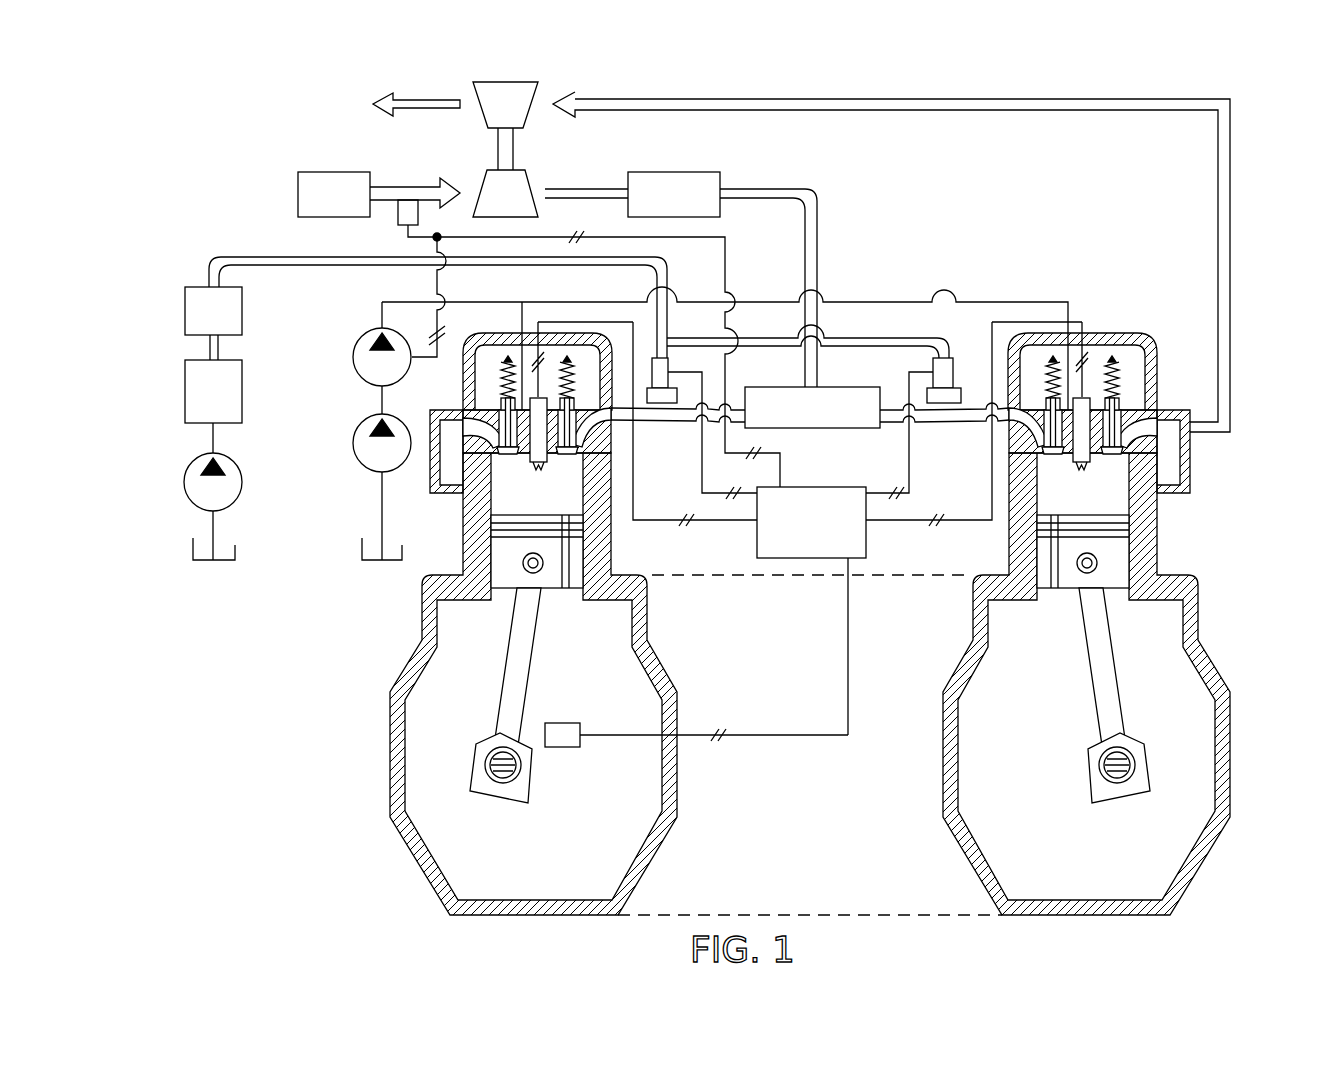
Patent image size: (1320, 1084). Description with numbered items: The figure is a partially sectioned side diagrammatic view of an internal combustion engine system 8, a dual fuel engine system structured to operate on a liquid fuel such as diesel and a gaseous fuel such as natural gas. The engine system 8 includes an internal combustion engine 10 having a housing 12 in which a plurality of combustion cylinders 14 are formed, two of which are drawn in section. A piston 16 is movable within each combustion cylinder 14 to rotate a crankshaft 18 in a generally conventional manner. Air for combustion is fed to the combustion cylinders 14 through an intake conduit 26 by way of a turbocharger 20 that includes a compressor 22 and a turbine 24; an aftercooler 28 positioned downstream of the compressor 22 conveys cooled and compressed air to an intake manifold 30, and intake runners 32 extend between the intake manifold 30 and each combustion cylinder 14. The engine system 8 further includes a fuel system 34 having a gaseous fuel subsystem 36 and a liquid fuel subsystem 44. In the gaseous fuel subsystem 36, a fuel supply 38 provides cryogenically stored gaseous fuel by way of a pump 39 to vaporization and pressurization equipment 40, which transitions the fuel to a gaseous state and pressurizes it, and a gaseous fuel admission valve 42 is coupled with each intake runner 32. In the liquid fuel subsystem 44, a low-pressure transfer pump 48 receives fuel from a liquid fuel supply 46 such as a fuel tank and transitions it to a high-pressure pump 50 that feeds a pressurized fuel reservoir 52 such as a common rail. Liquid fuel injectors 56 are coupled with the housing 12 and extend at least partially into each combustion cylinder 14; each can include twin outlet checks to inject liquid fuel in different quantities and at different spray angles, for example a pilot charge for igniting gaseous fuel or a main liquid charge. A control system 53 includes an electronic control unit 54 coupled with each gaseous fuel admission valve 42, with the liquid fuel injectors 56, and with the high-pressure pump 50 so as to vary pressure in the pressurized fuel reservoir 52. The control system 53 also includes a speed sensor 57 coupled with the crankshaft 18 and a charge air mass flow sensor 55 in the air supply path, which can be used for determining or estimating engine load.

The internal combustion engine system 8 is at (158, 108).
The internal combustion engine 10 is at (1258, 605).
The housing 12 is at (1232, 692).
The combustion cylinders 14 is at (474, 494).
The piston 16 is at (505, 568).
The crankshaft 18 is at (517, 766).
The turbocharger 20 is at (556, 80).
The compressor 22 is at (498, 175).
The turbine 24 is at (510, 82).
The intake conduit 26 is at (340, 172).
The aftercooler 28 is at (682, 172).
The intake manifold 30 is at (786, 387).
The intake runners 32 is at (665, 424).
The fuel system 34 is at (155, 295).
The gaseous fuel subsystem 36 is at (176, 437).
The fuel supply 38 is at (236, 552).
The pump 39 is at (242, 483).
The vaporization and pressurization equipment 40 is at (270, 398).
The gaseous fuel admission valve 42 is at (670, 360).
The liquid fuel subsystem 44 is at (340, 562).
The liquid fuel supply 46 is at (402, 552).
The low-pressure transfer pump 48 is at (353, 444).
The high-pressure pump 50 is at (353, 353).
The pressurized fuel reservoir 52 is at (918, 292).
The control system 53 is at (862, 602).
The electronic control unit 54 is at (826, 558).
The charge air mass flow sensor 55 is at (398, 220).
The liquid fuel injectors 56 is at (538, 470).
The speed sensor 57 is at (563, 723).